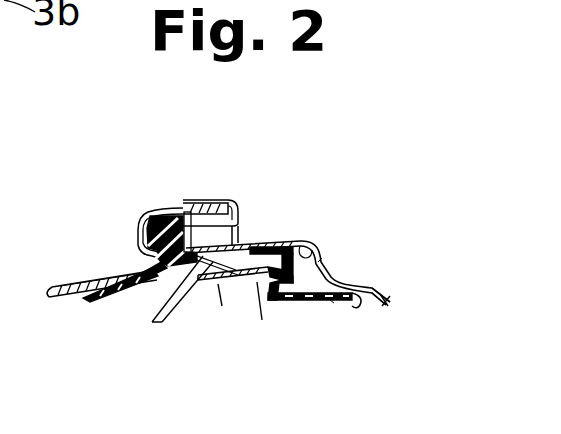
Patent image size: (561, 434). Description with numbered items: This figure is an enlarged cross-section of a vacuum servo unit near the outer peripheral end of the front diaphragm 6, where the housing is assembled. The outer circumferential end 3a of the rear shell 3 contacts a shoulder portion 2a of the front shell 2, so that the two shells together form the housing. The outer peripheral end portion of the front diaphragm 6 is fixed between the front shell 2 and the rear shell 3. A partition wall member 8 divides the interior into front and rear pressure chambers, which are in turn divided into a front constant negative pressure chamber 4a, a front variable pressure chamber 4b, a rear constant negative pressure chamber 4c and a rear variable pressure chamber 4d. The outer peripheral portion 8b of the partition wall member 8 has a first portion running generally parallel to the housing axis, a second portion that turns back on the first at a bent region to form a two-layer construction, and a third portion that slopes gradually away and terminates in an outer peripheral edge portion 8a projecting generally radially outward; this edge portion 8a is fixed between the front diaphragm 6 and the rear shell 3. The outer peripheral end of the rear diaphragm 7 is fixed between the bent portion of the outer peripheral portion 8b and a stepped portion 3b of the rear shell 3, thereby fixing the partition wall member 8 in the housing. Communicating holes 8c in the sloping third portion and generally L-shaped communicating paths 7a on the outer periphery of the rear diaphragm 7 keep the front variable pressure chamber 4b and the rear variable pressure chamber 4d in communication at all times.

The front shell 2 is at (60, 283).
The shoulder portion 2a is at (183, 203).
The rear shell 3 is at (268, 242).
The outer circumferential end 3a is at (233, 200).
The stepped portion 3b is at (317, 252).
The front constant negative pressure chamber 4a is at (93, 281).
The front variable pressure chamber 4b is at (173, 300).
The rear constant negative pressure chamber 4c is at (222, 306).
The rear variable pressure chamber 4d is at (377, 285).
The front diaphragm 6 is at (128, 296).
The rear diaphragm 7 is at (338, 305).
The communicating paths 7a is at (307, 243).
The partition wall member 8 is at (180, 298).
The outer peripheral edge portion 8a is at (217, 242).
The outer peripheral portion 8b is at (262, 320).
The communicating holes 8c is at (243, 242).